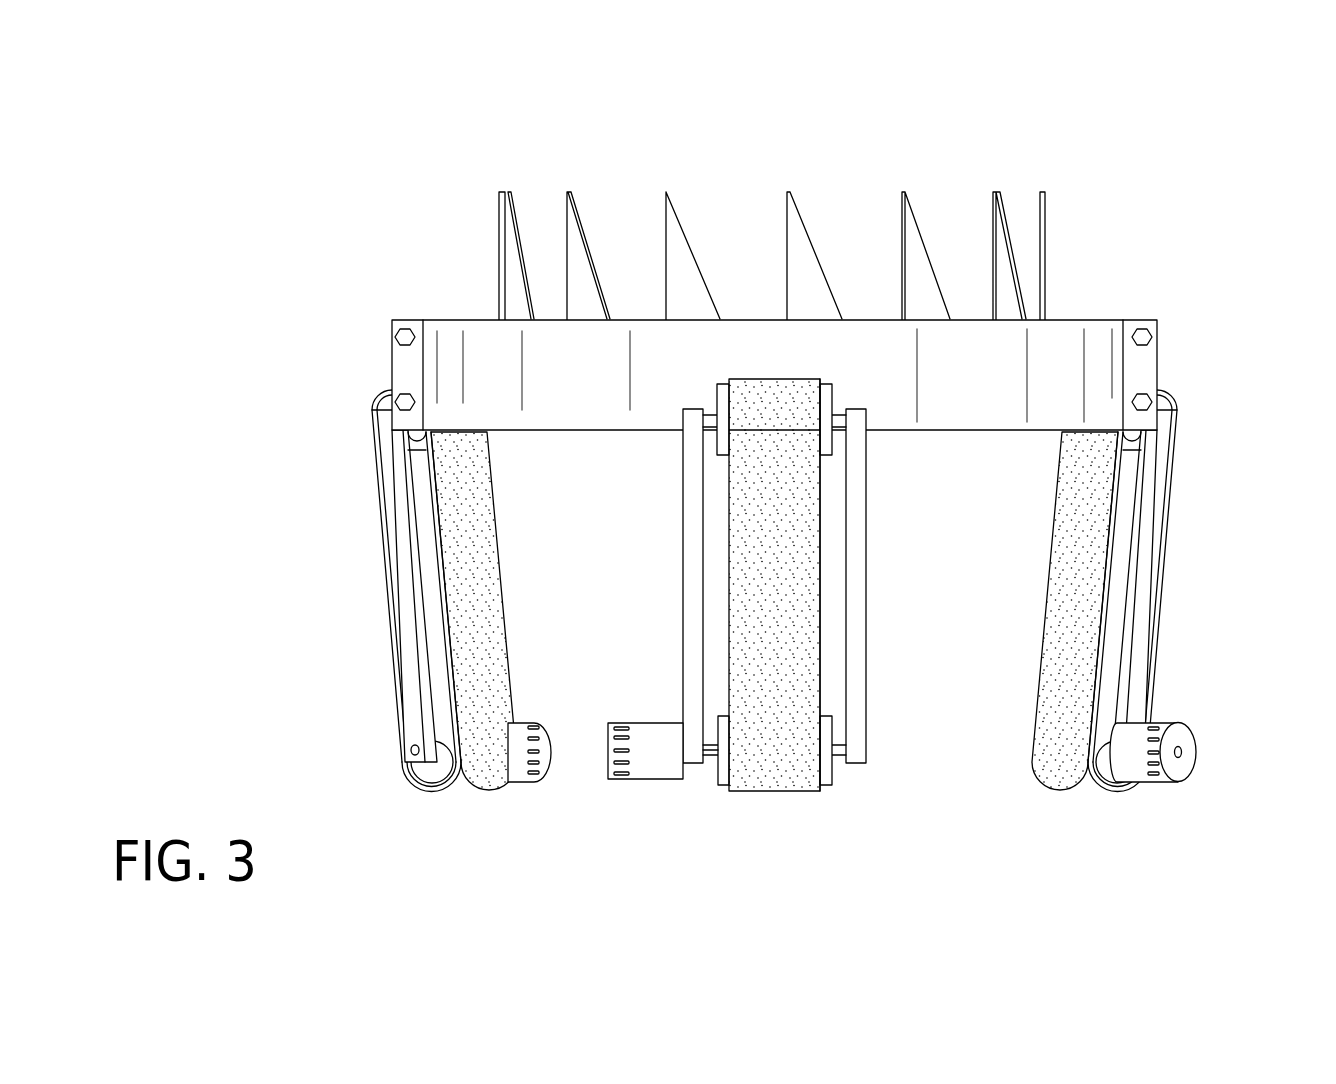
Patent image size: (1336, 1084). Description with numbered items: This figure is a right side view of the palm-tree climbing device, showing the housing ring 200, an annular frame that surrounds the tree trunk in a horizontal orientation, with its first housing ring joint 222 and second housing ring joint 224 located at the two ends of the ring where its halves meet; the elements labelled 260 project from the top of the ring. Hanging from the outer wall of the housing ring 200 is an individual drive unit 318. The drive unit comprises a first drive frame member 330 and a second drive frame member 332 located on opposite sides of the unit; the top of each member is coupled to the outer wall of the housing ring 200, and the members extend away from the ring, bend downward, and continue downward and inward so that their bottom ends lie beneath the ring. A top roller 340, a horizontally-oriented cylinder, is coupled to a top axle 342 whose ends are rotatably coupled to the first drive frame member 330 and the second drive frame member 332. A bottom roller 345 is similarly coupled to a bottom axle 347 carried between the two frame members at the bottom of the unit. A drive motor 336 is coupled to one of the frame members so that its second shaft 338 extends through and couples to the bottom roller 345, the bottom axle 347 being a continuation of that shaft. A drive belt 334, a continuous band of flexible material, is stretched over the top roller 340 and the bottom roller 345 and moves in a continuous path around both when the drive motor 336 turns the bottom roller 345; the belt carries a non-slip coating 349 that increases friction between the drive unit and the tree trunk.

The housing ring 200 is at (1053, 343).
The first housing ring joint 222 is at (1160, 373).
The second housing ring joint 224 is at (402, 380).
The tines 260 is at (993, 192).
The individual drive unit 318 is at (787, 649).
The first drive frame member 330 is at (683, 590).
The second drive frame member 332 is at (858, 569).
The drive belt 334 is at (820, 632).
The drive motor 336 is at (627, 790).
The second shaft 338 is at (713, 753).
The top roller 340 is at (827, 392).
The top axle 342 is at (838, 427).
The bottom roller 345 is at (826, 783).
The bottom axle 347 is at (842, 743).
The non-slip coating 349 is at (808, 518).